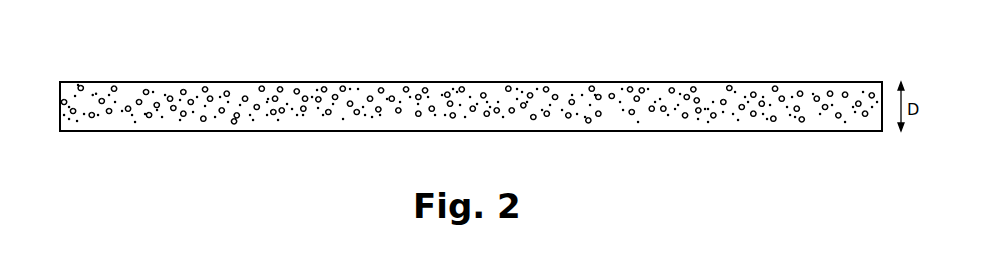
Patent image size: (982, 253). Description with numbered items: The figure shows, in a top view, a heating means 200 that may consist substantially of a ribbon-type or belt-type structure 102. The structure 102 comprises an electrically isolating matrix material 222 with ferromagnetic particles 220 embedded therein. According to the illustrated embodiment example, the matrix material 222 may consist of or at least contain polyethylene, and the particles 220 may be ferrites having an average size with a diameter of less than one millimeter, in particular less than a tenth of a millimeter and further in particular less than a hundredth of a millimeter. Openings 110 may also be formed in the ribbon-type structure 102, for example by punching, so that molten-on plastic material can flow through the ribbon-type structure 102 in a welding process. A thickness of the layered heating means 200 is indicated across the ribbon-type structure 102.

The heating means 200 is at (454, 102).
The ribbon-type structure 102 is at (735, 133).
The matrix material 222 is at (117, 124).
The ferromagnetic particles 220 is at (295, 115).
The openings 110 is at (651, 111).